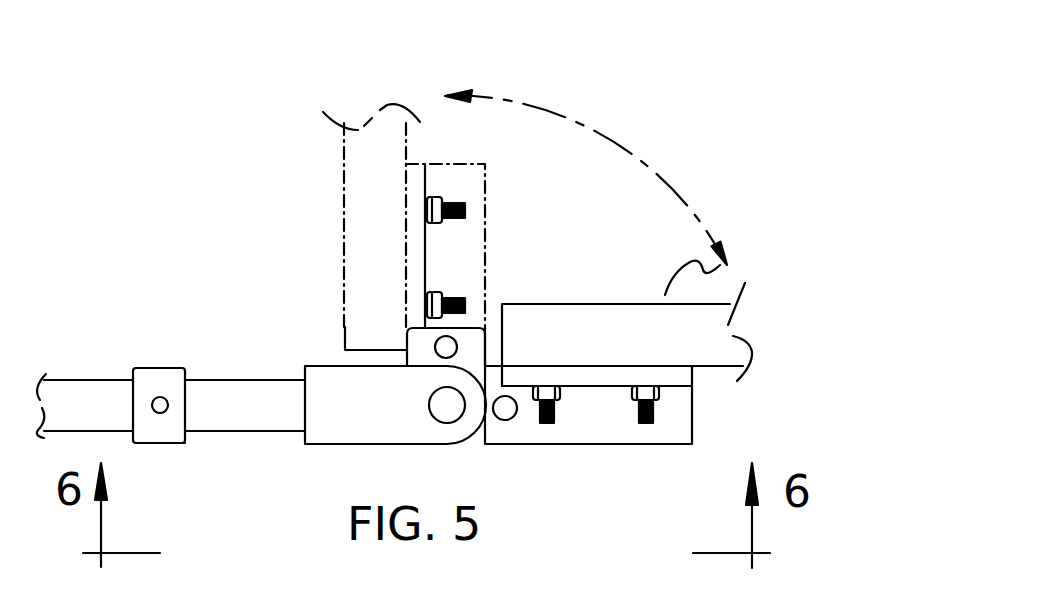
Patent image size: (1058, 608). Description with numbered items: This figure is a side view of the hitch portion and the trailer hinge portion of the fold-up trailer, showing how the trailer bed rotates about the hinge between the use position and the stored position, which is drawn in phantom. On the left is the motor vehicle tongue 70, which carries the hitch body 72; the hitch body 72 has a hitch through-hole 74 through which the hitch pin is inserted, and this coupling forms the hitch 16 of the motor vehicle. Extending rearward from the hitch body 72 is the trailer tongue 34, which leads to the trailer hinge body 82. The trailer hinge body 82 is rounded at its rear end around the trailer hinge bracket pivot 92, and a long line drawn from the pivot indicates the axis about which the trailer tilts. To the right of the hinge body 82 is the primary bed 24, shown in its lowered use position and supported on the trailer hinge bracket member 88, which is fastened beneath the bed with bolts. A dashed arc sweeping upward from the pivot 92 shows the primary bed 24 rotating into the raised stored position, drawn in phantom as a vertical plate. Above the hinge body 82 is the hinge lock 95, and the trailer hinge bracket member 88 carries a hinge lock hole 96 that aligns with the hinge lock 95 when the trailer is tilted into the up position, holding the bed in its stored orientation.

The hitch 16 is at (172, 450).
The primary bed 24 is at (720, 265).
The trailer tongue 34 is at (247, 392).
The motor vehicle tongue 70 is at (72, 395).
The hitch body 72 is at (169, 378).
The hitch through-hole 74 is at (167, 410).
The trailer hinge body 82 is at (437, 437).
The trailer hinge bracket member 88 is at (670, 398).
The trailer hinge bracket pivot 92 is at (447, 402).
The hinge lock 95 is at (440, 340).
The hinge lock hole 96 is at (512, 420).